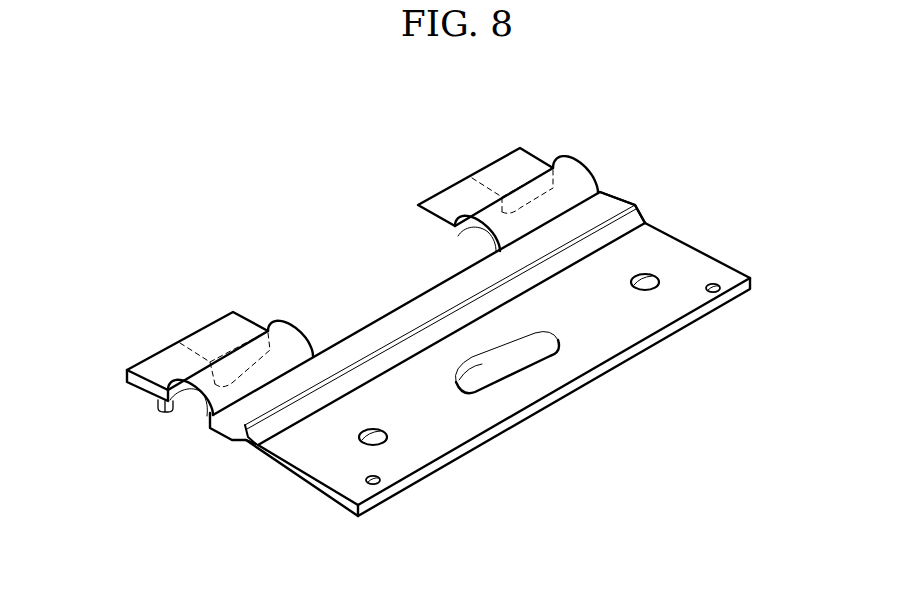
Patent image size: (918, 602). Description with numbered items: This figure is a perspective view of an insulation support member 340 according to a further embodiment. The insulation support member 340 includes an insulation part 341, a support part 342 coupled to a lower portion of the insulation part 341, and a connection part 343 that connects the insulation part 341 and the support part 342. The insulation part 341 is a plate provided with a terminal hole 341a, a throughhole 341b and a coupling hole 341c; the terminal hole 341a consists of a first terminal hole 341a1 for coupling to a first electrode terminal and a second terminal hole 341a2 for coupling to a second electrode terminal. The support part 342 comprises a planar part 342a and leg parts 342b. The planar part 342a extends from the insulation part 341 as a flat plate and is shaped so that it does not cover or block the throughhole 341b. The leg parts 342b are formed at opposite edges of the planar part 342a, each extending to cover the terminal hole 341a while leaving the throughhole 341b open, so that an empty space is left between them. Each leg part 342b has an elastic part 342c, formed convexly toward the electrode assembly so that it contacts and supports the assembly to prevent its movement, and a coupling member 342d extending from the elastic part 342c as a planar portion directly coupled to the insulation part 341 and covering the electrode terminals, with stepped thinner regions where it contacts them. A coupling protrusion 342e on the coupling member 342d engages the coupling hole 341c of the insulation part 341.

The insulation support member 340 is at (170, 104).
The insulation part 341 is at (697, 262).
The terminal hole 341a is at (686, 432).
The first terminal hole 341a1 is at (363, 436).
The second terminal hole 341a2 is at (628, 282).
The throughhole 341b is at (484, 364).
The coupling hole 341c is at (708, 290).
The support part 342 is at (732, 120).
The planar part 342a is at (643, 206).
The leg parts 342b is at (668, 150).
The elastic part 342c is at (587, 183).
The coupling member 342d is at (537, 151).
The coupling protrusion 342e is at (517, 212).
The connection part 343 is at (636, 217).